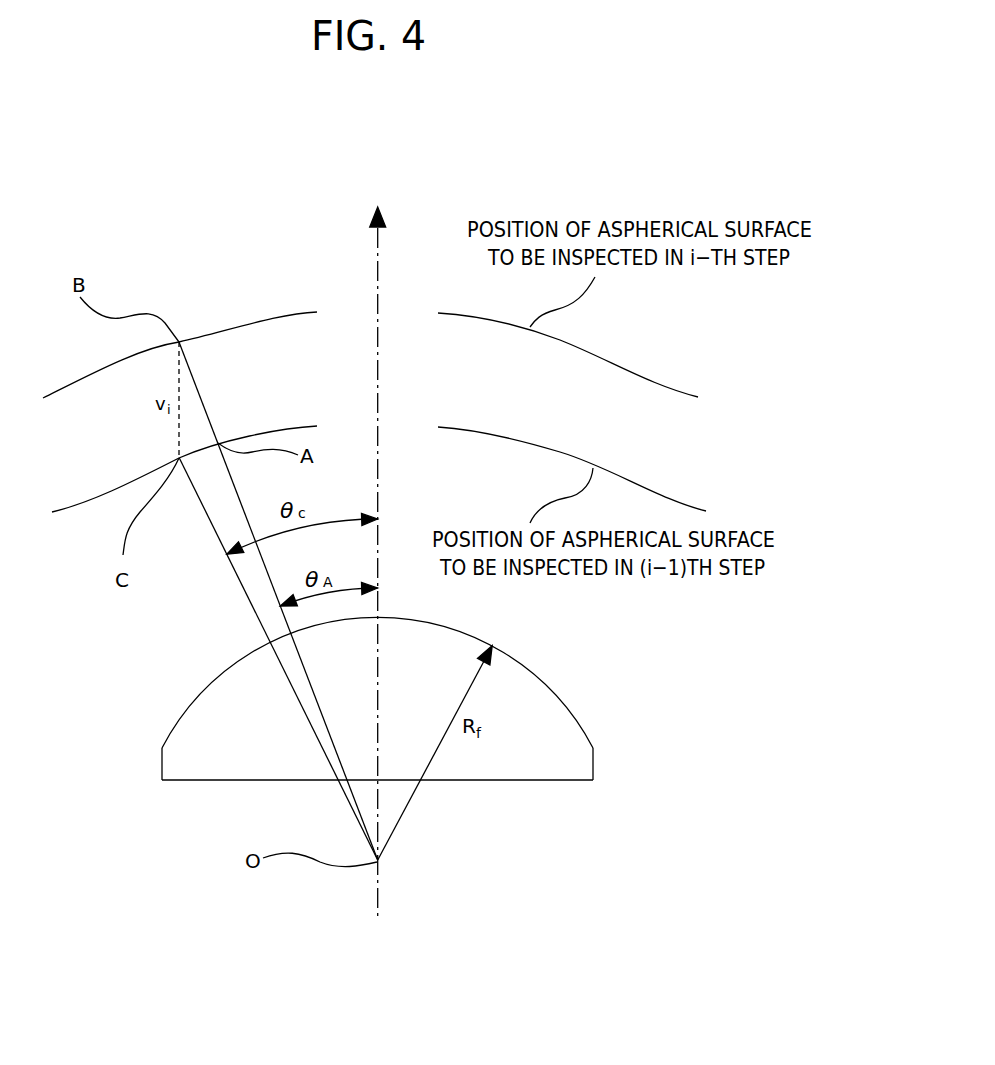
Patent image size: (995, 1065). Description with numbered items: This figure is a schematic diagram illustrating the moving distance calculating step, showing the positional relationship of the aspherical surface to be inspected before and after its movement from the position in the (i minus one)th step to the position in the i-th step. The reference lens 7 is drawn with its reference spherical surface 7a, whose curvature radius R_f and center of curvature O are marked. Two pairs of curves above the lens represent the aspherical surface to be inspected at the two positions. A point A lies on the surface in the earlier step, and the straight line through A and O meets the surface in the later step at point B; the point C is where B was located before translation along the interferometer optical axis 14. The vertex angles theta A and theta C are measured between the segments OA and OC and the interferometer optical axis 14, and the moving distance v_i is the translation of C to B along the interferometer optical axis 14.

The interferometer optical axis 14 is at (377, 292).
The reference lens 7 is at (427, 720).
The reference spherical surface 7a is at (550, 687).